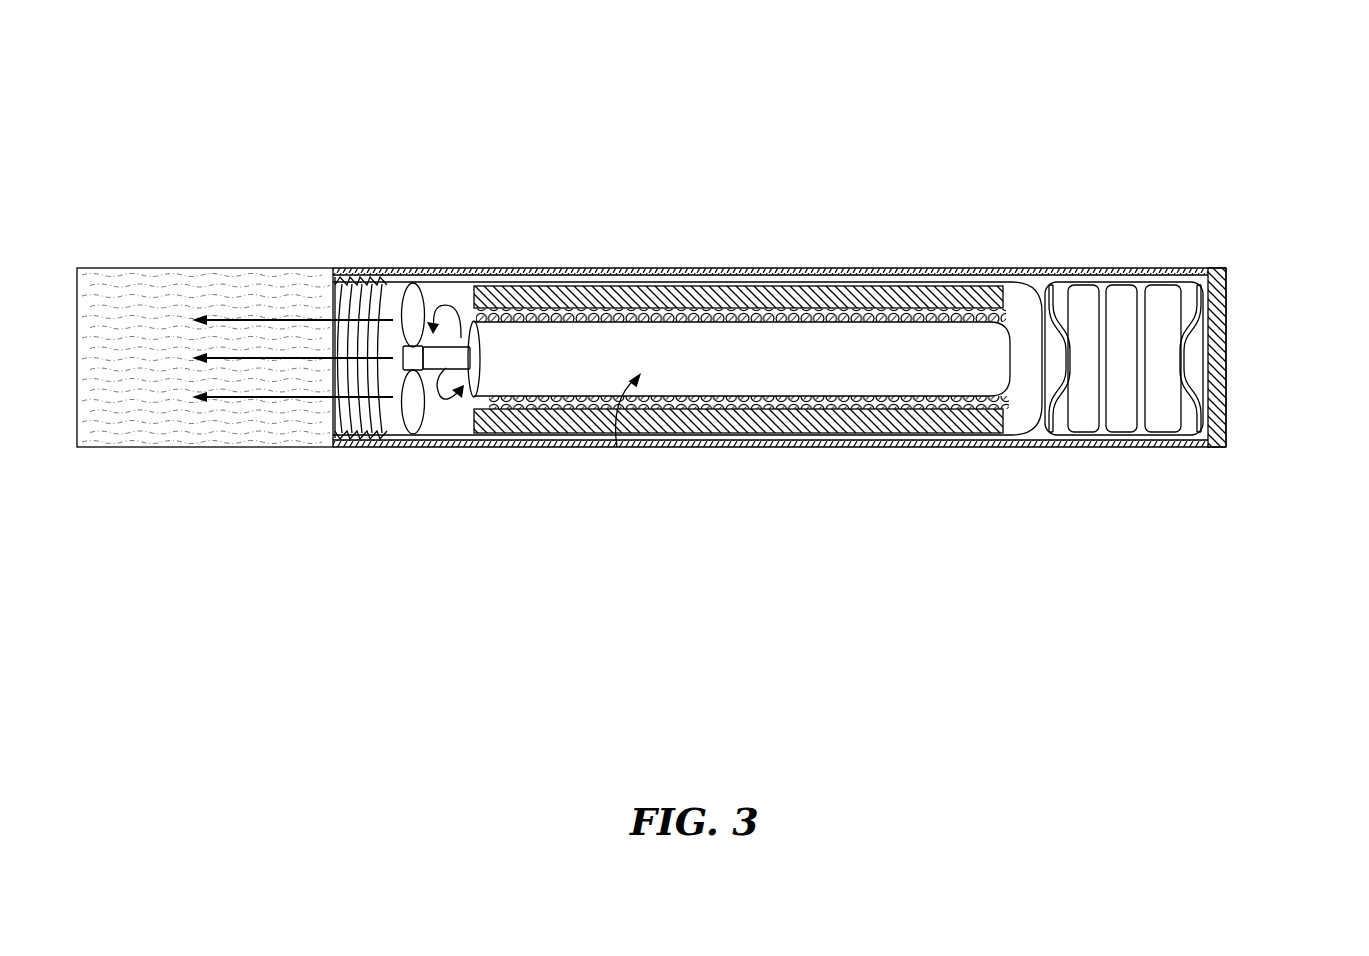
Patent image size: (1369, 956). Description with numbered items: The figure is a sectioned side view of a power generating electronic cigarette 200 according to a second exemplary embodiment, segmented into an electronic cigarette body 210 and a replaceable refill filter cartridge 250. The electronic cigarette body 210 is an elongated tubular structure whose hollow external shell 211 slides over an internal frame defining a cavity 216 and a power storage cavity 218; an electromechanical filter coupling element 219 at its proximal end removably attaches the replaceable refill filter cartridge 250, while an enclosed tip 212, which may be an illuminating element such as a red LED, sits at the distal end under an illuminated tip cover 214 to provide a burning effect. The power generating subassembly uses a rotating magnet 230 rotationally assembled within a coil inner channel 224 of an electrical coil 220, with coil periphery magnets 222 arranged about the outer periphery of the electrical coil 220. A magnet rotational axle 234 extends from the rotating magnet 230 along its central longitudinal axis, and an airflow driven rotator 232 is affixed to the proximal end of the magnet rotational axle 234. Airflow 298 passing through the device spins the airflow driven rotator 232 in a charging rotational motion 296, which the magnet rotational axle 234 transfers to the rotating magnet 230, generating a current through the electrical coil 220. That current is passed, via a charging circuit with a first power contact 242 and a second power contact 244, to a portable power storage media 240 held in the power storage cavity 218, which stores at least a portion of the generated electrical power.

The power generating electronic cigarette 200 is at (237, 132).
The electronic cigarette body 210 is at (543, 442).
The hollow external shell 211 is at (882, 448).
The enclosed tip 212 is at (1210, 268).
The illuminated tip cover 214 is at (1230, 417).
The cavity 216 is at (1025, 377).
The power storage cavity 218 is at (1060, 417).
The electromechanical filter coupling element 219 is at (350, 434).
The electrical coil 220 is at (784, 312).
The coil periphery magnet 222 is at (687, 297).
The coil inner channel 224 is at (700, 404).
The rotating magnet 230 is at (617, 447).
The airflow driven rotator 232 is at (413, 416).
The magnet rotational axle 234 is at (448, 371).
The portable power storage media 240 is at (1123, 407).
The first power contact 242 is at (1070, 313).
The second power contact 244 is at (1183, 318).
The replaceable refill filter cartridge 250 is at (168, 418).
The charging rotational motion 296 is at (447, 312).
The airflow 298 is at (297, 318).